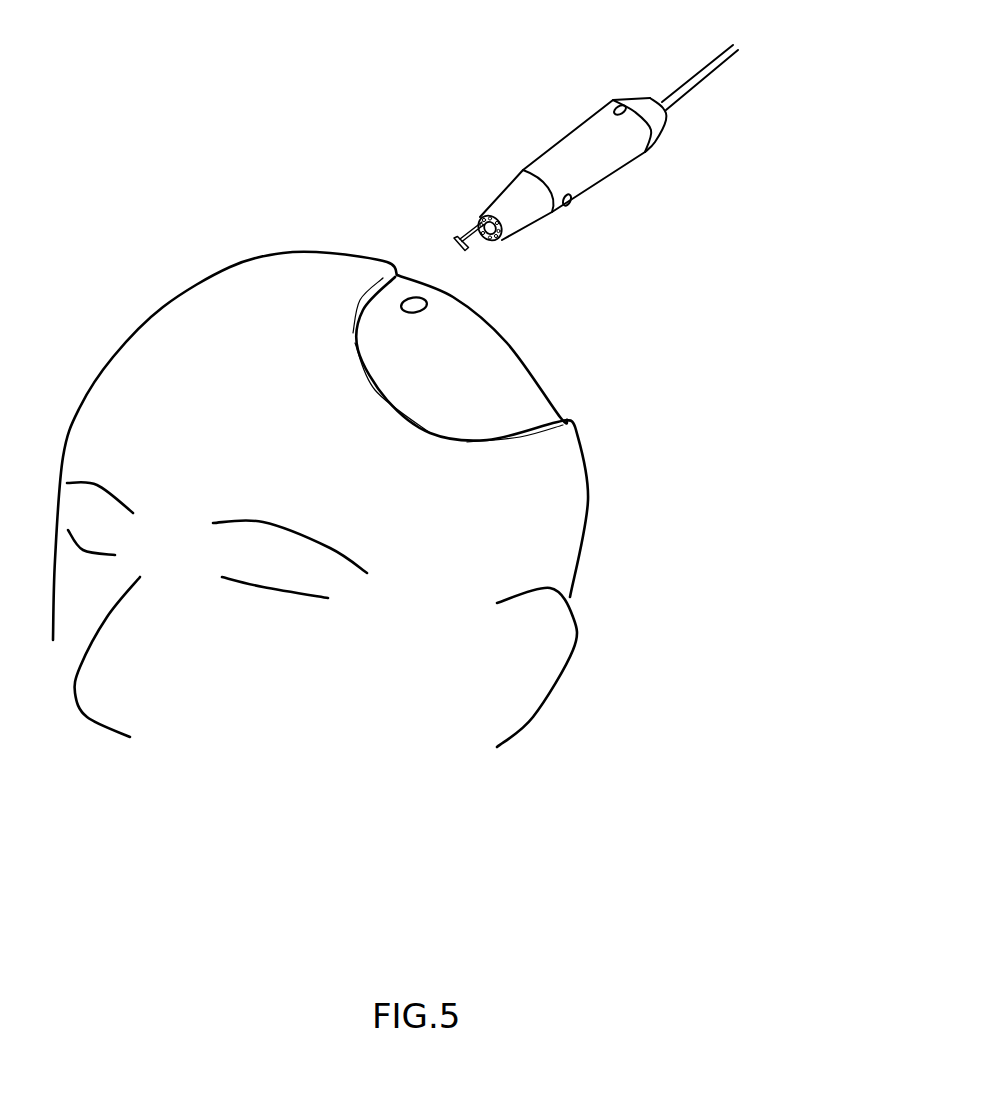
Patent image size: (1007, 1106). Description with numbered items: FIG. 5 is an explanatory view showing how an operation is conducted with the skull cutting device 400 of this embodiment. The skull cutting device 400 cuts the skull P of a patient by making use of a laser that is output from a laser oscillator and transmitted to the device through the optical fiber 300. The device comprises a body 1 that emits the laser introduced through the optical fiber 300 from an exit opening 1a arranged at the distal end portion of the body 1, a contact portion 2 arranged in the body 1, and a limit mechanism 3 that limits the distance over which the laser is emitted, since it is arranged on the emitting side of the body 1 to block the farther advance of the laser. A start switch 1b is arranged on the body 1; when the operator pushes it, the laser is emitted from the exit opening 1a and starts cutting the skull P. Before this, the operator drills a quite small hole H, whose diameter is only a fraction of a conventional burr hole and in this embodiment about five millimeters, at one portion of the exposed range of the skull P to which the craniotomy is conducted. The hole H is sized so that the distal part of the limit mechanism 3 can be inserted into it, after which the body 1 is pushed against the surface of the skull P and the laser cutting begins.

The skull cutting device 400 is at (566, 184).
The body 1 is at (617, 173).
The exit opening 1a is at (607, 108).
The start switch 1b is at (572, 207).
The optical fiber 300 is at (707, 78).
The contact portion 2 is at (495, 252).
The limit mechanism 3 is at (455, 232).
The skull P is at (527, 365).
The hole H is at (414, 313).